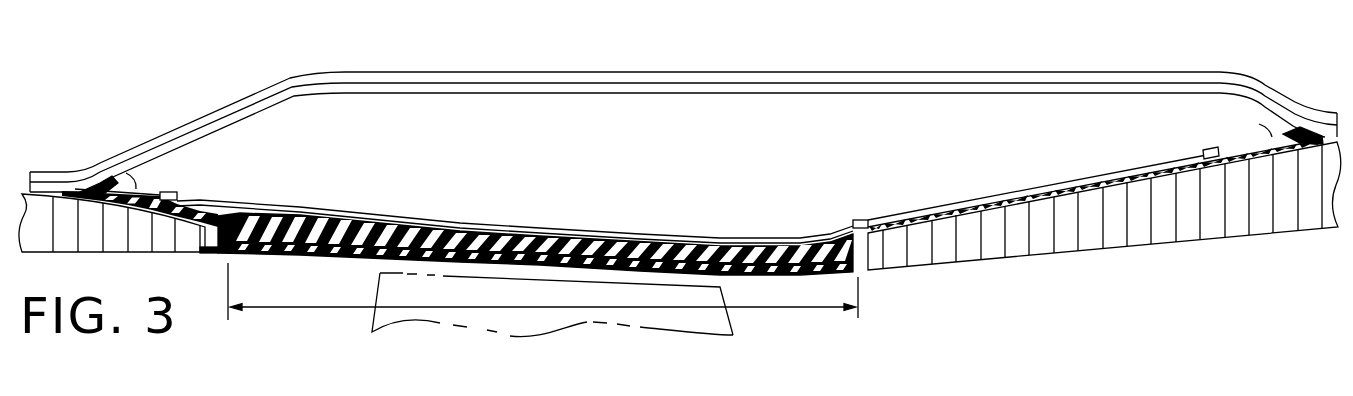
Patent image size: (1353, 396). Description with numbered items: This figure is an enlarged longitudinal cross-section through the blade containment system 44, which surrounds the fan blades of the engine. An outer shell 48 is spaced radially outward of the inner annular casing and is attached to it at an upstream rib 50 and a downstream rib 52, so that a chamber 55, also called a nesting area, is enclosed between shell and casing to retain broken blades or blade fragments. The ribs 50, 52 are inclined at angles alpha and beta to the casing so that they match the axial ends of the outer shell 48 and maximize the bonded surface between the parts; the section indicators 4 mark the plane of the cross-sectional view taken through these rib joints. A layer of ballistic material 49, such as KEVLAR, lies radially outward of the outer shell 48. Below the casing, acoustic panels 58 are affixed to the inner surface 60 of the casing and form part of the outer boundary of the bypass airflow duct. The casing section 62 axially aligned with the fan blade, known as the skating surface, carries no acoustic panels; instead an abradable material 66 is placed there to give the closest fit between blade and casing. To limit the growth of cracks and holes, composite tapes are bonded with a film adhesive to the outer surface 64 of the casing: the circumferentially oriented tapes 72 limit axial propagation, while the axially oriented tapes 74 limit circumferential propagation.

The section line 4- 4 is at (27, 73).
The blade containment system 44 is at (762, 65).
The outer shell 48 is at (702, 92).
The ballistic material 49 is at (645, 76).
The upstream axial rib 50 is at (112, 172).
The downstream axial rib 52 is at (1290, 130).
The chamber 55 is at (612, 171).
The acoustic panels 58 is at (1042, 240).
The inner surface of annular casing 60 is at (896, 245).
The section of annular casing 62 is at (797, 310).
The outer surface of annular casing 64 is at (443, 215).
The abradable material 66 is at (789, 276).
The circumferentially oriented composite tapes 72 is at (170, 194).
The axially oriented composite tapes 74 is at (317, 220).